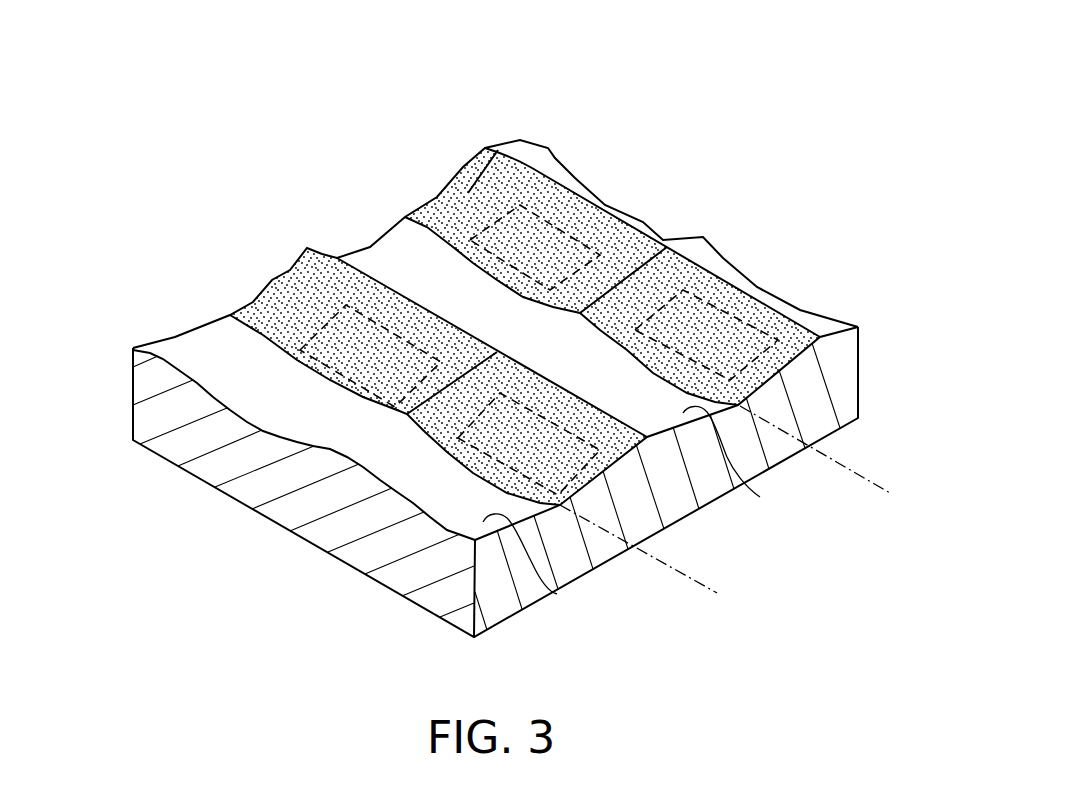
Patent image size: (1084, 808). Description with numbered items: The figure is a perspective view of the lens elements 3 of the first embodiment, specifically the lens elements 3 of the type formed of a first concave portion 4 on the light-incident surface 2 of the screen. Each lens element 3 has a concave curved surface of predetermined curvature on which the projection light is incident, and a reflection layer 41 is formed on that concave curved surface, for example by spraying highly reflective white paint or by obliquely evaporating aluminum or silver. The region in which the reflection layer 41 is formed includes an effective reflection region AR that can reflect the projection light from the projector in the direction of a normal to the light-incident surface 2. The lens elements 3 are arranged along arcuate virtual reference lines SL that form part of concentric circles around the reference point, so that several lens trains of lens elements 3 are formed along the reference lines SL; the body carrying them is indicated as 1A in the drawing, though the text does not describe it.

The light-incident surface 2 is at (519, 327).
The substrate 1A is at (862, 364).
The lens elements 3 is at (481, 393).
The first concave portion 4 is at (620, 230).
The reflection layer 41 is at (544, 329).
The effective reflection region AR is at (588, 258).
The reference lines SL is at (740, 499).